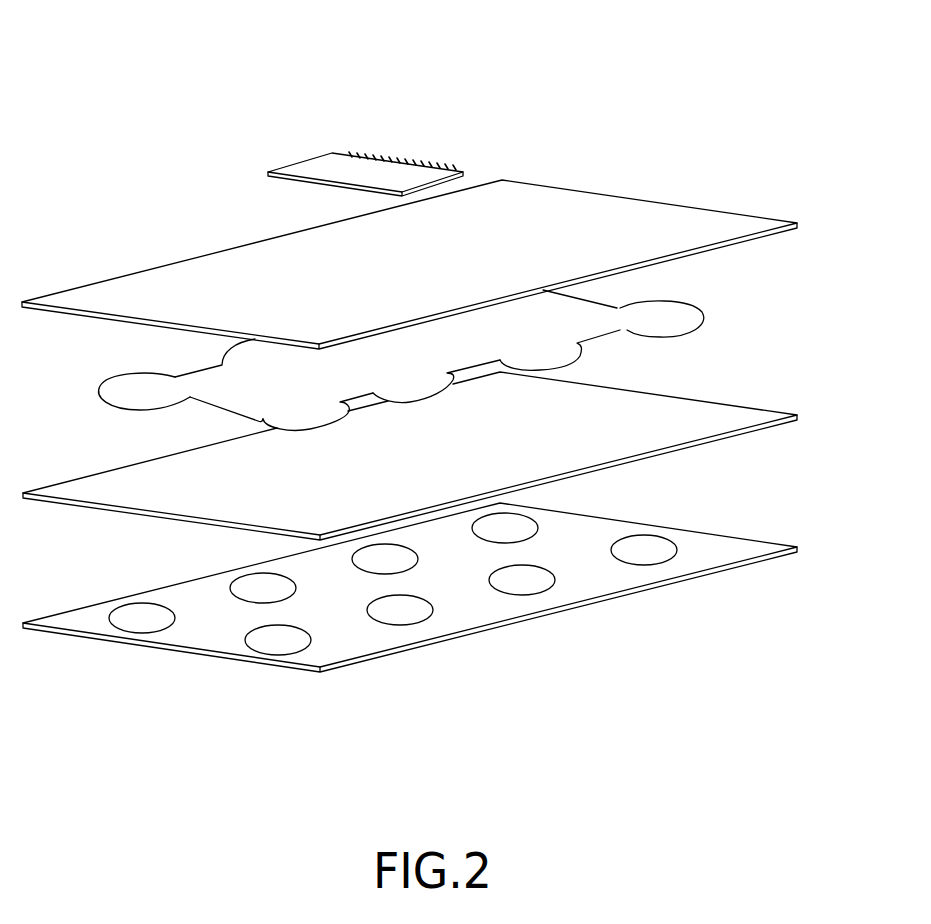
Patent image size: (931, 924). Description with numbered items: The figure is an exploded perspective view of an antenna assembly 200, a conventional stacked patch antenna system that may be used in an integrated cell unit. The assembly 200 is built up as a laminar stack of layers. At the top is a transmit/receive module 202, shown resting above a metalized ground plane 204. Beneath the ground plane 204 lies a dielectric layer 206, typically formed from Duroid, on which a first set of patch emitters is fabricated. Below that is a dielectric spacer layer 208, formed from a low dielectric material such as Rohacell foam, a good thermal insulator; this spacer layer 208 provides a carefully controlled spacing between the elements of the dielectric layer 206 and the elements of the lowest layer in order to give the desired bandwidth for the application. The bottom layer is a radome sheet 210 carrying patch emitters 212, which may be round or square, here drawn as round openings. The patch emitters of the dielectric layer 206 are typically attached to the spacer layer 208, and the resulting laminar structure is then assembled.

The antenna assembly 200 is at (808, 163).
The transmit/receive module 202 is at (345, 167).
The metalized ground plane 204 is at (685, 220).
The dielectric layer 206 is at (682, 315).
The dielectric spacer layer 208 is at (733, 413).
The radome sheet 210 is at (723, 547).
The patch emitters 212 is at (271, 648).